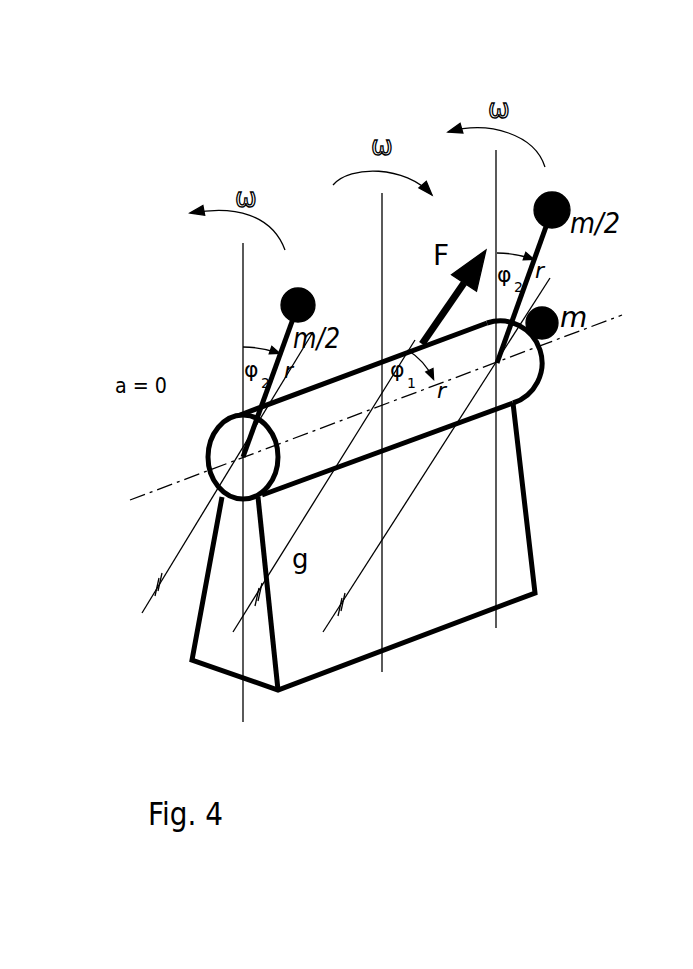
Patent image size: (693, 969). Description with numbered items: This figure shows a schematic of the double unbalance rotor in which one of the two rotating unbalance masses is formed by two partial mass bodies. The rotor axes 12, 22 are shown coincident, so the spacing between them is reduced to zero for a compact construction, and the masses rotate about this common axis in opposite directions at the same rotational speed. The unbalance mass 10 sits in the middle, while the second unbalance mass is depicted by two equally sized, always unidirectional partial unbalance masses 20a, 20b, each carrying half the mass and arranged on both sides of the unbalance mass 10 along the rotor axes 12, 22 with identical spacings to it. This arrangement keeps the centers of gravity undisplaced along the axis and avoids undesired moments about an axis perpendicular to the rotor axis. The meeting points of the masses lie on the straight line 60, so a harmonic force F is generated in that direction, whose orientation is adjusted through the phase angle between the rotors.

The unbalance mass 10 is at (555, 335).
The rotor axis 12 is at (332, 407).
The rotor axis 22 is at (140, 497).
The partial unbalance mass 20a is at (300, 285).
The partial unbalance mass 20b is at (558, 190).
The straight line 60 is at (247, 607).